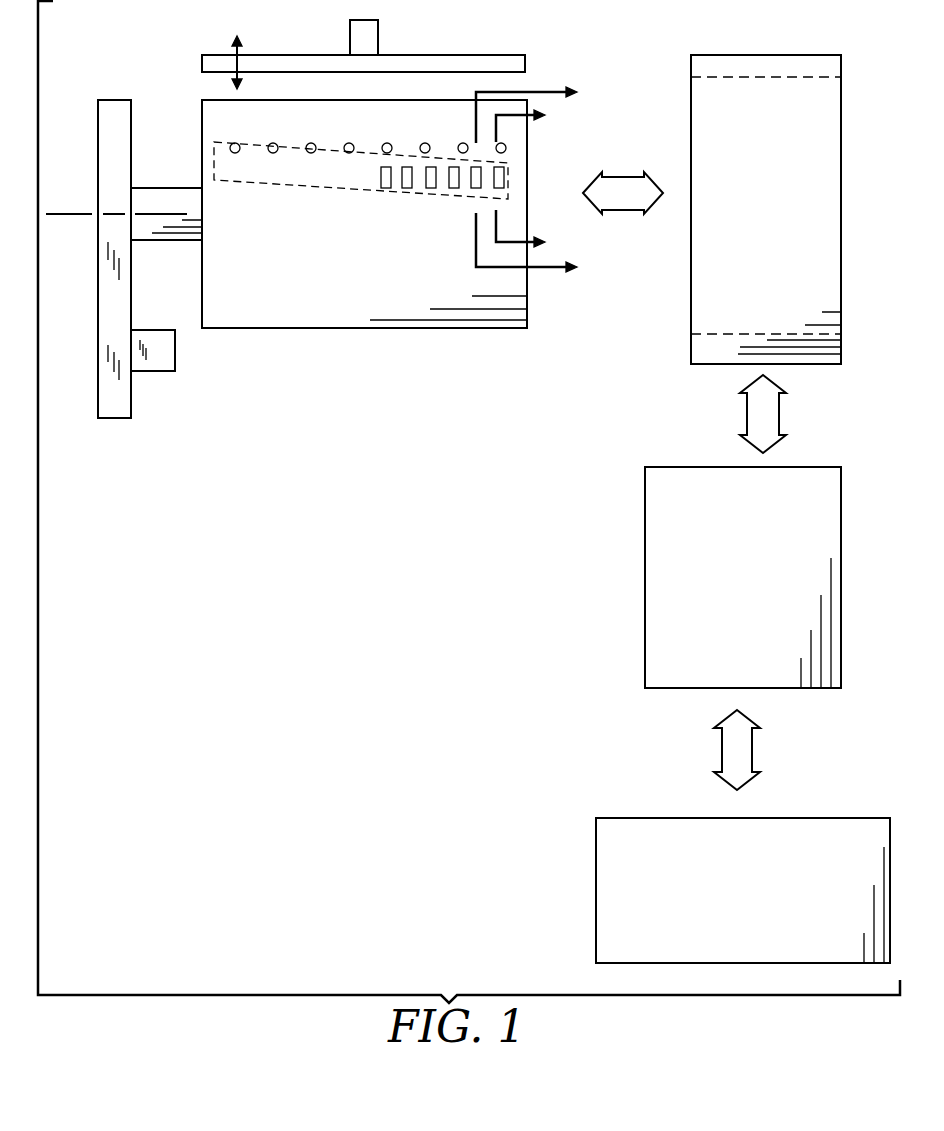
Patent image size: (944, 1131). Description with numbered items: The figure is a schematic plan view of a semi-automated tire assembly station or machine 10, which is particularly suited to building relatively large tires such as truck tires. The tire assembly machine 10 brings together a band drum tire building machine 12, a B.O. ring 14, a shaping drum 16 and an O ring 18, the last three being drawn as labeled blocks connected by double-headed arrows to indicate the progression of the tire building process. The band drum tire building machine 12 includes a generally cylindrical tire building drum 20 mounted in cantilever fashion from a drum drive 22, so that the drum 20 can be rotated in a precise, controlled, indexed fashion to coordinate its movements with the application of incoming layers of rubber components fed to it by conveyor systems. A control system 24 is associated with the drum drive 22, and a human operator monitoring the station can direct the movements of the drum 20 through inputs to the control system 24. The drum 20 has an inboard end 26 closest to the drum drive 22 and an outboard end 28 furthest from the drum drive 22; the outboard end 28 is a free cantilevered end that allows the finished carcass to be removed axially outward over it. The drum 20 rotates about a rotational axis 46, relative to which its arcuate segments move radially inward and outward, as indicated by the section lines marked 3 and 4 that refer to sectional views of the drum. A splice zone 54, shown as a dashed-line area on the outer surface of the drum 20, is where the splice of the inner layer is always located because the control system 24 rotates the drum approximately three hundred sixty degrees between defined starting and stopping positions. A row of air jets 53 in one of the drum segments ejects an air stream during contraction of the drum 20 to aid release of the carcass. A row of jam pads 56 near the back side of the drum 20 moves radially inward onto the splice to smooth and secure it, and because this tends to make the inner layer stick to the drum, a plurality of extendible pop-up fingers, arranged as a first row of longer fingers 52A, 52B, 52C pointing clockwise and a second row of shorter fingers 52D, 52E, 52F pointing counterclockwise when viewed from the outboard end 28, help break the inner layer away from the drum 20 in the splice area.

The tire assembly machine 10 is at (240, 652).
The band drum tire building machine 12 is at (391, 246).
The B.O. ring 14 is at (752, 279).
The shaping drum 16 is at (734, 627).
The O ring 18 is at (736, 918).
The tire building drum 20 is at (272, 312).
The drum drive 22 is at (123, 408).
The control system 24 is at (167, 350).
The inboard end 26 is at (202, 288).
The outboard end 28 is at (527, 305).
The rotational axis 46 is at (82, 214).
The longer finger 52A is at (505, 178).
The longer finger 52B is at (454, 167).
The longer finger 52C is at (407, 167).
The shorter finger 52D is at (476, 189).
The shorter finger 52E is at (431, 189).
The shorter finger 52F is at (386, 189).
The air jets 53 is at (313, 143).
The splice zone 54 is at (227, 187).
The jam pads 56 is at (280, 55).
The section line for FIG. 3 is at (529, 183).
The section line for FIG. 4 is at (540, 182).